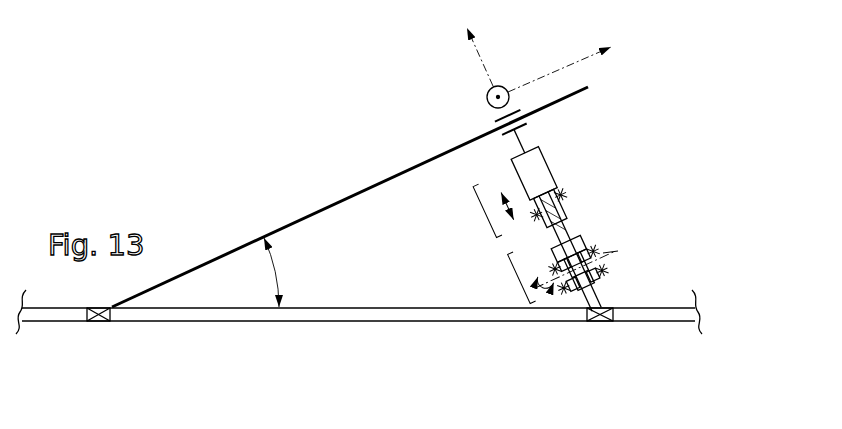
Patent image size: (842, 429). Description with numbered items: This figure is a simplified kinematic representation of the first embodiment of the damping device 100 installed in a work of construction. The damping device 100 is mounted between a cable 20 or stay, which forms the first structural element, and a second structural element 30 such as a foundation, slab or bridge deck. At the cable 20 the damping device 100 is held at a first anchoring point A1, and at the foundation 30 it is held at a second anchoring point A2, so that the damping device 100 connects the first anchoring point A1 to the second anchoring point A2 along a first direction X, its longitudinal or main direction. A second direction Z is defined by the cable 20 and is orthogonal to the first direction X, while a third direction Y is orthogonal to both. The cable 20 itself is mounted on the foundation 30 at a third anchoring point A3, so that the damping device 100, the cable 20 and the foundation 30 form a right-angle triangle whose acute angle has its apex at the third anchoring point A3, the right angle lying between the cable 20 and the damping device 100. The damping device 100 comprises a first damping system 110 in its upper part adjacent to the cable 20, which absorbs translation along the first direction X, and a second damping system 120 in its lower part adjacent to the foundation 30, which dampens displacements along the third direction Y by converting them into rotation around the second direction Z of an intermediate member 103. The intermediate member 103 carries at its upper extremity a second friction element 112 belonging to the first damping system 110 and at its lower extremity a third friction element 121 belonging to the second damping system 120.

The cable 20 is at (305, 216).
The second structural element 30 is at (347, 313).
The damping device 100 is at (576, 232).
The intermediate member 103 is at (579, 222).
The first damping system 110 is at (473, 217).
The second friction element 112 is at (556, 192).
The second damping system 120 is at (544, 272).
The third friction element 121 is at (623, 275).
The first anchoring point A1 is at (488, 124).
The second anchoring point A2 is at (597, 322).
The third anchoring point A3 is at (100, 322).
The rotation axis R is at (611, 252).
The first direction X is at (480, 44).
The third direction Y is at (486, 97).
The second direction Z is at (564, 53).